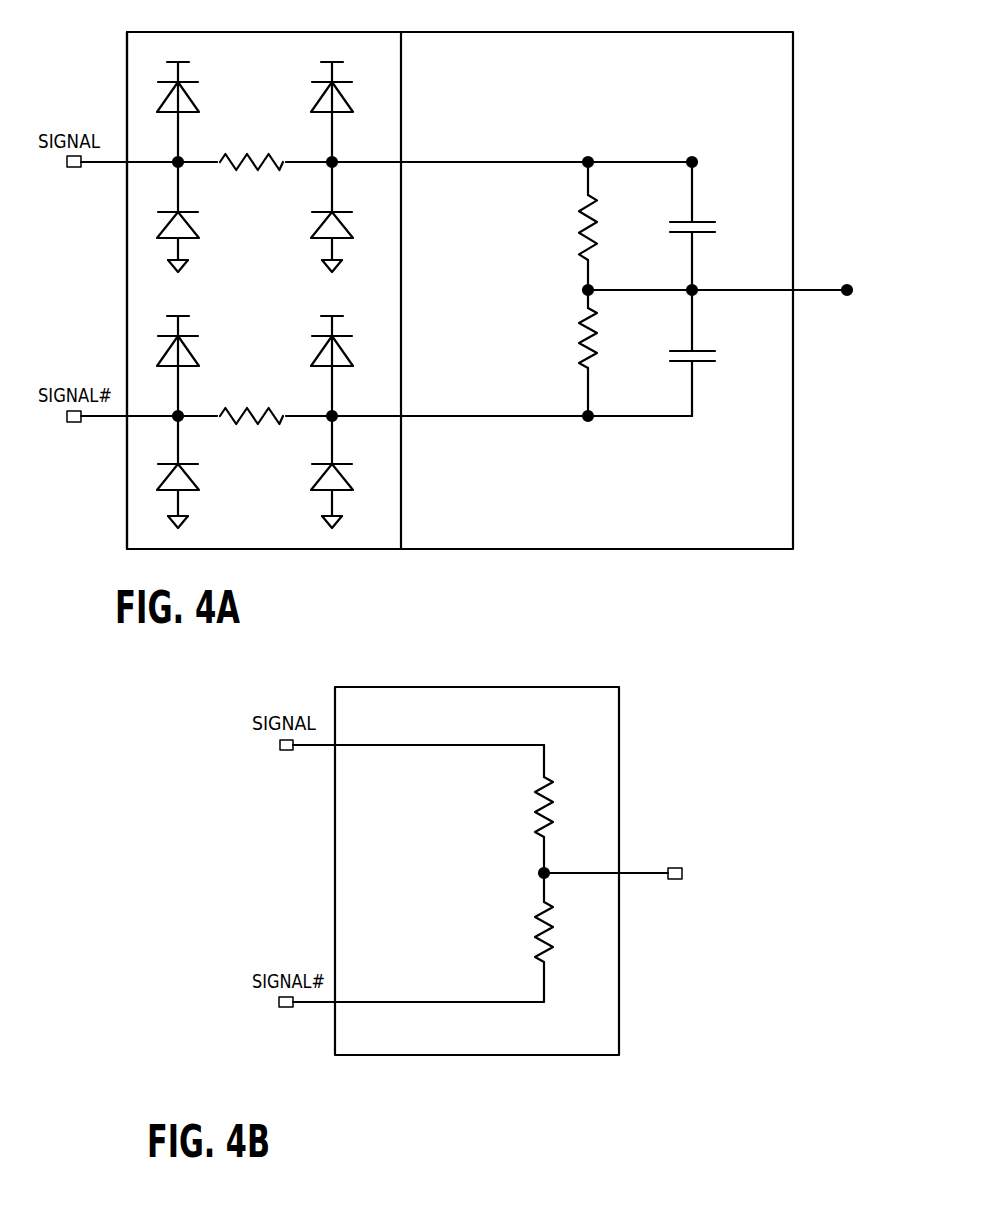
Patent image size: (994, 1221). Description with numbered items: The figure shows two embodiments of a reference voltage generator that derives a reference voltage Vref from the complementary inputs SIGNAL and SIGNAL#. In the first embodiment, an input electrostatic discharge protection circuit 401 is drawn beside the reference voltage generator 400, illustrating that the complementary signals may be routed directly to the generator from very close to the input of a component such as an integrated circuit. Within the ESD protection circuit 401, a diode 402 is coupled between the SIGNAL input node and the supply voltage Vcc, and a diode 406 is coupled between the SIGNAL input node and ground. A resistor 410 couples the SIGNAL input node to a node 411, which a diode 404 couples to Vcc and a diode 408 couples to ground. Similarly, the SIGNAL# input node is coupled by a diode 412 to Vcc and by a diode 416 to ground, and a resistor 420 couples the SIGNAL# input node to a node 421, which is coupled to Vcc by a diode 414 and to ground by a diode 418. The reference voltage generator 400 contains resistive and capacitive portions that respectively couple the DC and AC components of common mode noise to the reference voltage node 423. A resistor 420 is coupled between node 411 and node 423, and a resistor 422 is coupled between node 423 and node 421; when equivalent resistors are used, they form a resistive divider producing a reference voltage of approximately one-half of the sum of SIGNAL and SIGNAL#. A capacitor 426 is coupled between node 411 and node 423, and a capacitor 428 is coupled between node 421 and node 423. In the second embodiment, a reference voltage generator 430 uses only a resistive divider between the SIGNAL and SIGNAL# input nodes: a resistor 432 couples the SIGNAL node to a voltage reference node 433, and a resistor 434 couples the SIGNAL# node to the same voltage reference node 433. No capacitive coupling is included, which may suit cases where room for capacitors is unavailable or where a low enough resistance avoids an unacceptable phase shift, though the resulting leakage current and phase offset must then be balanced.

In FIG. 4A, the reference voltage generator 400 is at (735, 553).
In FIG. 4A, the input electrostatic discharge protection circuit 401 is at (325, 551).
In FIG. 4A, the diode 402 is at (195, 117).
In FIG. 4A, the diode 404 is at (349, 117).
In FIG. 4A, the diode 406 is at (195, 244).
In FIG. 4A, the diode 408 is at (349, 244).
In FIG. 4A, the resistor 410 is at (252, 182).
In FIG. 4A, the node 411 is at (337, 168).
In FIG. 4A, the diode 412 is at (195, 371).
In FIG. 4A, the diode 414 is at (349, 371).
In FIG. 4A, the diode 416 is at (195, 497).
In FIG. 4A, the diode 418 is at (349, 497).
In FIG. 4A, the resistor 420 is at (252, 436).
In FIG. 4A, the node 421 is at (337, 422).
In FIG. 4A, the resistor 422 is at (603, 350).
In FIG. 4A, the reference voltage node 423 is at (850, 300).
In FIG. 4A, the capacitor 426 is at (719, 234).
In FIG. 4A, the capacitor 428 is at (719, 356).
In FIG. 4B, the reference voltage generator 430 is at (580, 1058).
In FIG. 4B, the resistor 432 is at (559, 804).
In FIG. 4B, the voltage reference node 433 is at (672, 887).
In FIG. 4B, the resistor 434 is at (558, 930).